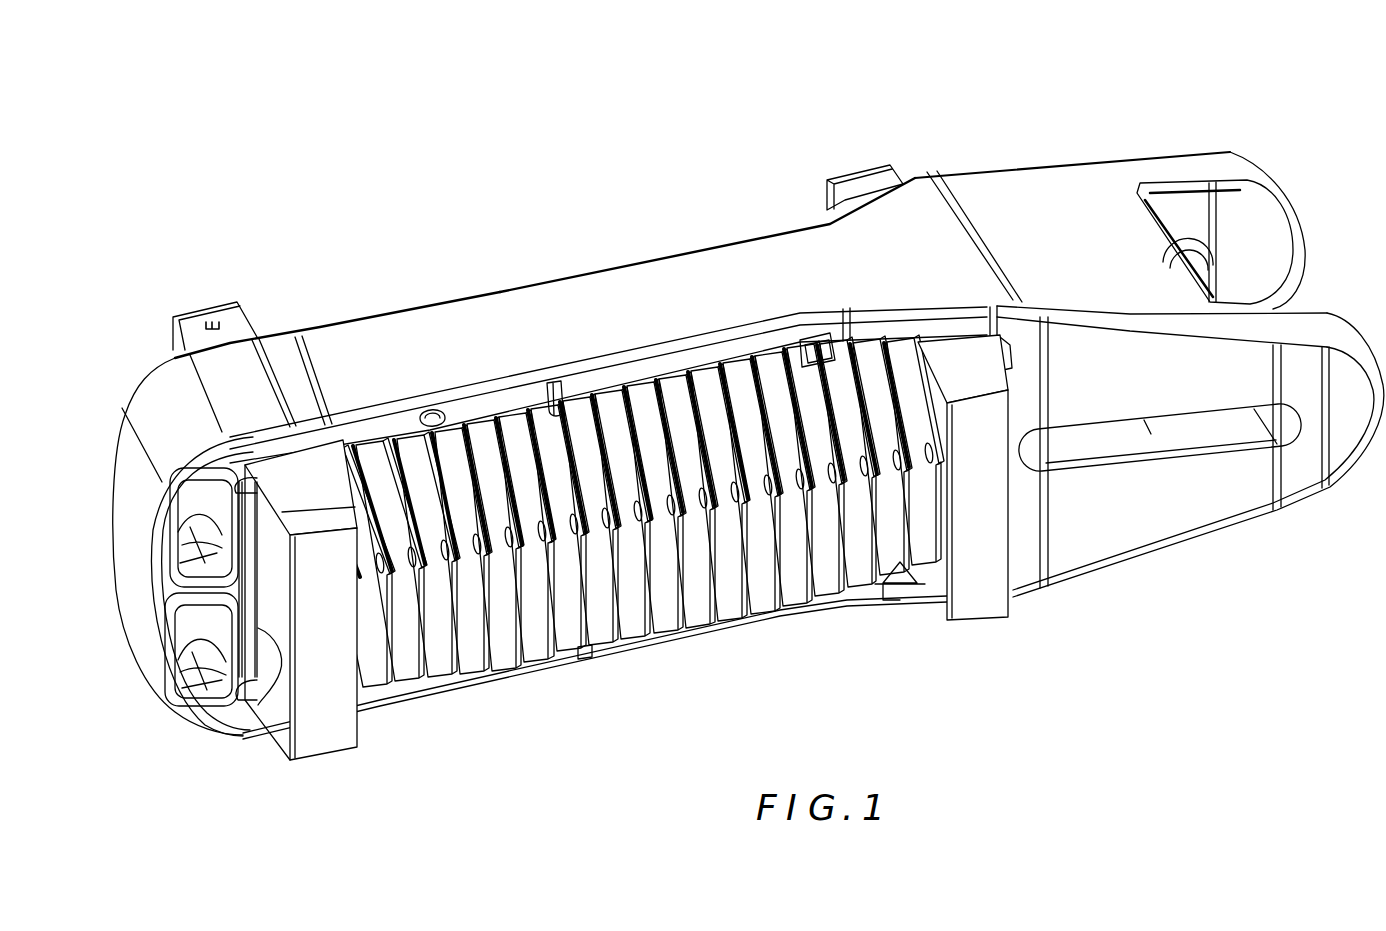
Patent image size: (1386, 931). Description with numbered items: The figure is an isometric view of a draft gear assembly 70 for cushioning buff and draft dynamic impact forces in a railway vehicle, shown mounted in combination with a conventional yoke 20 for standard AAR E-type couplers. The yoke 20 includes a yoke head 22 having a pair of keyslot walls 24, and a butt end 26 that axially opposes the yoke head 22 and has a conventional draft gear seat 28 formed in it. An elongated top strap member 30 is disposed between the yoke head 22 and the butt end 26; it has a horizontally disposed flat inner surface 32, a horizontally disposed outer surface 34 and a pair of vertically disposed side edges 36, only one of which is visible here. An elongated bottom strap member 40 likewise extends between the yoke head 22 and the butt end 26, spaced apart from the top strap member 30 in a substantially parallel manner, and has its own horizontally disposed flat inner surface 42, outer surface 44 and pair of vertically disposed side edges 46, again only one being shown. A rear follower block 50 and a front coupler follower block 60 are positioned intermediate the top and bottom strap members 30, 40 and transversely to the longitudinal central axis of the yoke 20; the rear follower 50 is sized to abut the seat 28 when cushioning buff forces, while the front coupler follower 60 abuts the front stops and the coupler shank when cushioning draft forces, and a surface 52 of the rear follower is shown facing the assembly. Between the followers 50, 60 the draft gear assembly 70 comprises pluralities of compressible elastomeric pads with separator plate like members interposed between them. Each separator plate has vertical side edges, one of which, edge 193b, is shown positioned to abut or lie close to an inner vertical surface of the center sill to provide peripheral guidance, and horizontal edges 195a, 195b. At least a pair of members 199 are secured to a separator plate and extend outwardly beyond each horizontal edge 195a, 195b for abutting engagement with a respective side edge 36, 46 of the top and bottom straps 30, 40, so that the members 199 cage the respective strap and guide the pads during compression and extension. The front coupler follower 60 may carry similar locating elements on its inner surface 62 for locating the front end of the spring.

The yoke 20 is at (1030, 158).
The yoke head 22 is at (1100, 195).
The keyslot walls 24 is at (1250, 178).
The butt end 26 is at (135, 412).
The draft gear seat 28 is at (262, 705).
The top strap member 30 is at (538, 300).
The flat inner surface 32 is at (590, 395).
The outer surface 34 is at (420, 342).
The side edges 36 is at (740, 360).
The bottom strap member 40 is at (478, 684).
The flat inner surface 42 is at (900, 580).
The outer surface 44 is at (507, 674).
The side edges 46 is at (667, 630).
The rear follower block 50 is at (330, 740).
The first end block face 52 is at (362, 715).
The front coupler follower block 60 is at (985, 600).
The inner surface 62 is at (935, 600).
The draft gear assembly 70 is at (668, 102).
The vertical side edge 193b is at (782, 594).
The horizontal edge 195a is at (650, 410).
The horizontal edge 195b is at (737, 622).
The members 199 is at (550, 400).